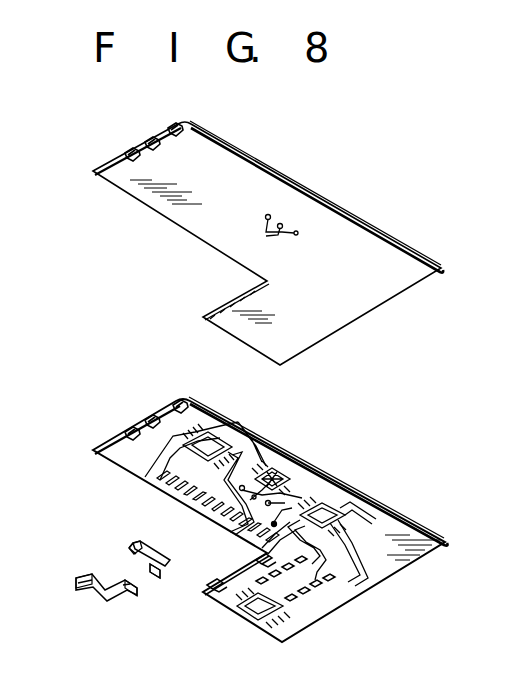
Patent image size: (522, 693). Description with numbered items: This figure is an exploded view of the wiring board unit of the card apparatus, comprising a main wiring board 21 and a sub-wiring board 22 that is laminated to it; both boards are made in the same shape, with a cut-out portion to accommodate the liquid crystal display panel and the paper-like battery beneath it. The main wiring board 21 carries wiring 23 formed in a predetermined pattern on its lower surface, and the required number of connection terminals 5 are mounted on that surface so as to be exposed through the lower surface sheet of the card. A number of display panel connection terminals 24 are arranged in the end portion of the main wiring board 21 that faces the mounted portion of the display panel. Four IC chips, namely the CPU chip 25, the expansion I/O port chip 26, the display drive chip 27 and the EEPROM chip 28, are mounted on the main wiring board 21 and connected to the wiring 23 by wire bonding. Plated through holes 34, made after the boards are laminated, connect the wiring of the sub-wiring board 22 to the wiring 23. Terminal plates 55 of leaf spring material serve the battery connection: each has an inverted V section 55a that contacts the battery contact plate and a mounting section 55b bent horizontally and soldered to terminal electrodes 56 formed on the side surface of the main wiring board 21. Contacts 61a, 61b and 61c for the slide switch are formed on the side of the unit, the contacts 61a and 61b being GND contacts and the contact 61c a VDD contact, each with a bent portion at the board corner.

The connection terminals 5 is at (292, 600).
The main wiring board 21 is at (428, 532).
The sub-wiring board 22 is at (372, 245).
The wiring 23 is at (153, 456).
The display panel connection terminals 24 is at (158, 480).
The CPU chip 25 is at (322, 512).
The expansion I/O port chip 26 is at (270, 476).
The display drive chip 27 is at (210, 435).
The EEPROM chip 28 is at (258, 612).
The through holes 34 is at (272, 494).
The terminal plates 55 is at (82, 592).
The inverted V section 55a is at (133, 548).
The mounting section 55b is at (130, 597).
The terminal electrodes 56 is at (260, 558).
The GND contact 61a is at (174, 126).
The GND contact 61b is at (149, 142).
The VDD contact 61c is at (128, 153).